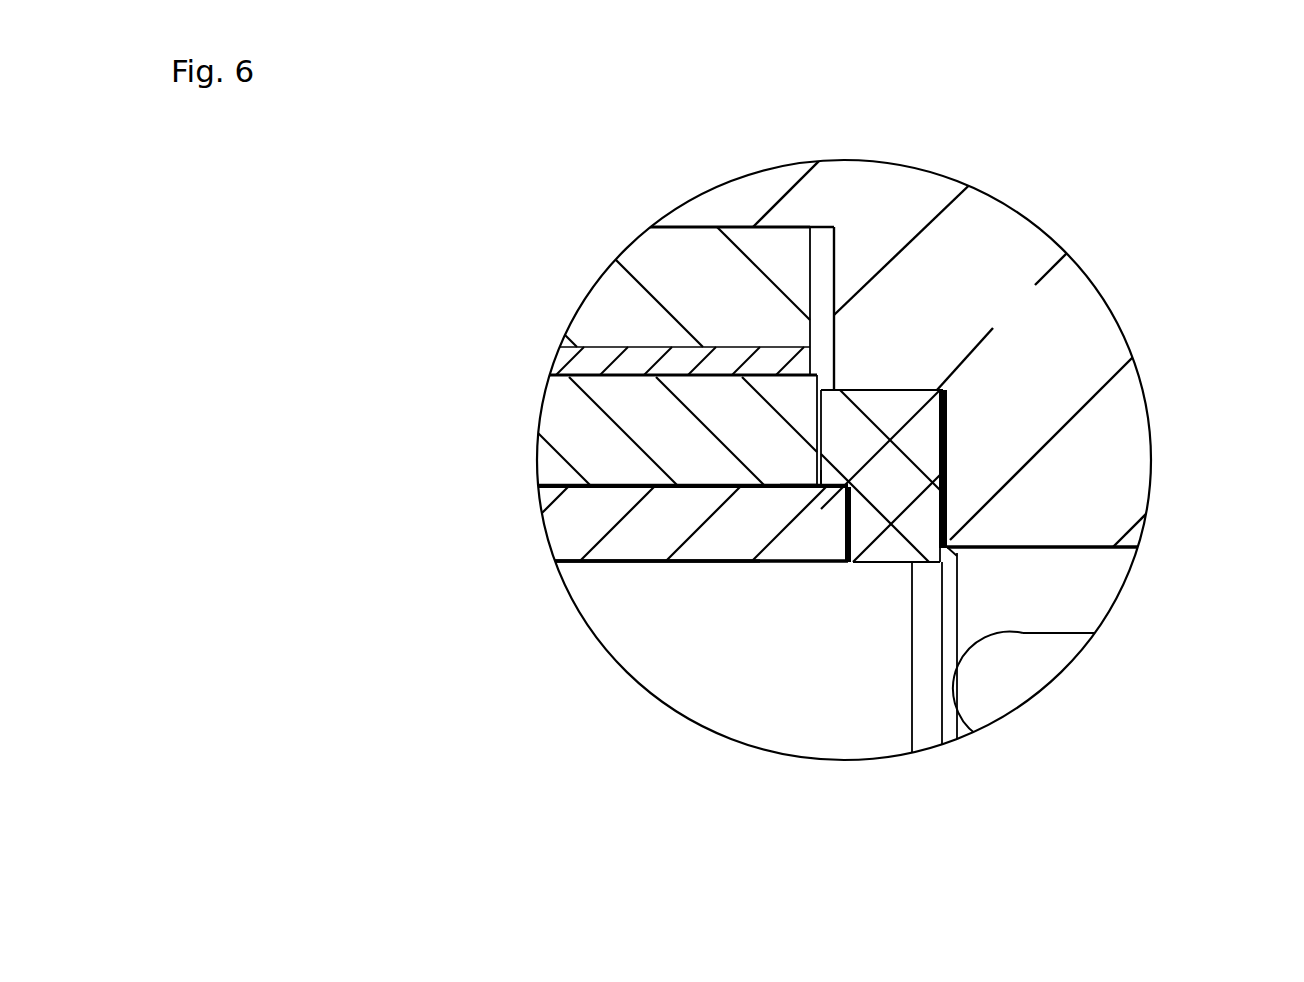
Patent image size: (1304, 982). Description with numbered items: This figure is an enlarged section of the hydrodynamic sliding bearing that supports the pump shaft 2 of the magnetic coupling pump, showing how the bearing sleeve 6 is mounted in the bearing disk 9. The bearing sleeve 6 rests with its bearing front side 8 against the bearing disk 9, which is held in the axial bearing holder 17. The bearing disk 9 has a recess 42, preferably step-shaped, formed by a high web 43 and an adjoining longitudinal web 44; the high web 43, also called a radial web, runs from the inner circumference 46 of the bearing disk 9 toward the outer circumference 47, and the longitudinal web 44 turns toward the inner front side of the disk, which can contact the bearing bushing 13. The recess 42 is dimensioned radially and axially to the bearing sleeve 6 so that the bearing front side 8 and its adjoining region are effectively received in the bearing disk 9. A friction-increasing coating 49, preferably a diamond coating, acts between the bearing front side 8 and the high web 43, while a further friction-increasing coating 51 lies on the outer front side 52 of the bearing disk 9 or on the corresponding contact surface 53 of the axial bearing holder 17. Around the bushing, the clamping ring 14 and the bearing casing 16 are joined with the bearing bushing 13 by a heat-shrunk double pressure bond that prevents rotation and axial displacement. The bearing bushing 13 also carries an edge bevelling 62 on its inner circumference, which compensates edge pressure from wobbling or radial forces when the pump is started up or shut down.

The pump shaft 2 is at (678, 665).
The bearing sleeve 6 is at (747, 533).
The bearing front side 8 is at (838, 515).
The bearing disk 9 is at (892, 537).
The bearing bushing 13 is at (547, 428).
The clamping ring 14 is at (557, 363).
The bearing casing 16 is at (590, 297).
The axial bearing holder 17 is at (733, 202).
The recess 42 is at (827, 537).
The high web 43 is at (852, 492).
The longitudinal web 44 is at (832, 480).
The inner circumference 46 is at (885, 565).
The outer circumference 47 is at (898, 392).
The friction-increasing coating 49 is at (858, 517).
The friction-increasing coating 51 is at (947, 448).
The outer front side 52 is at (933, 437).
The contact surface 53 is at (947, 482).
The edge bevelling 62 is at (795, 480).